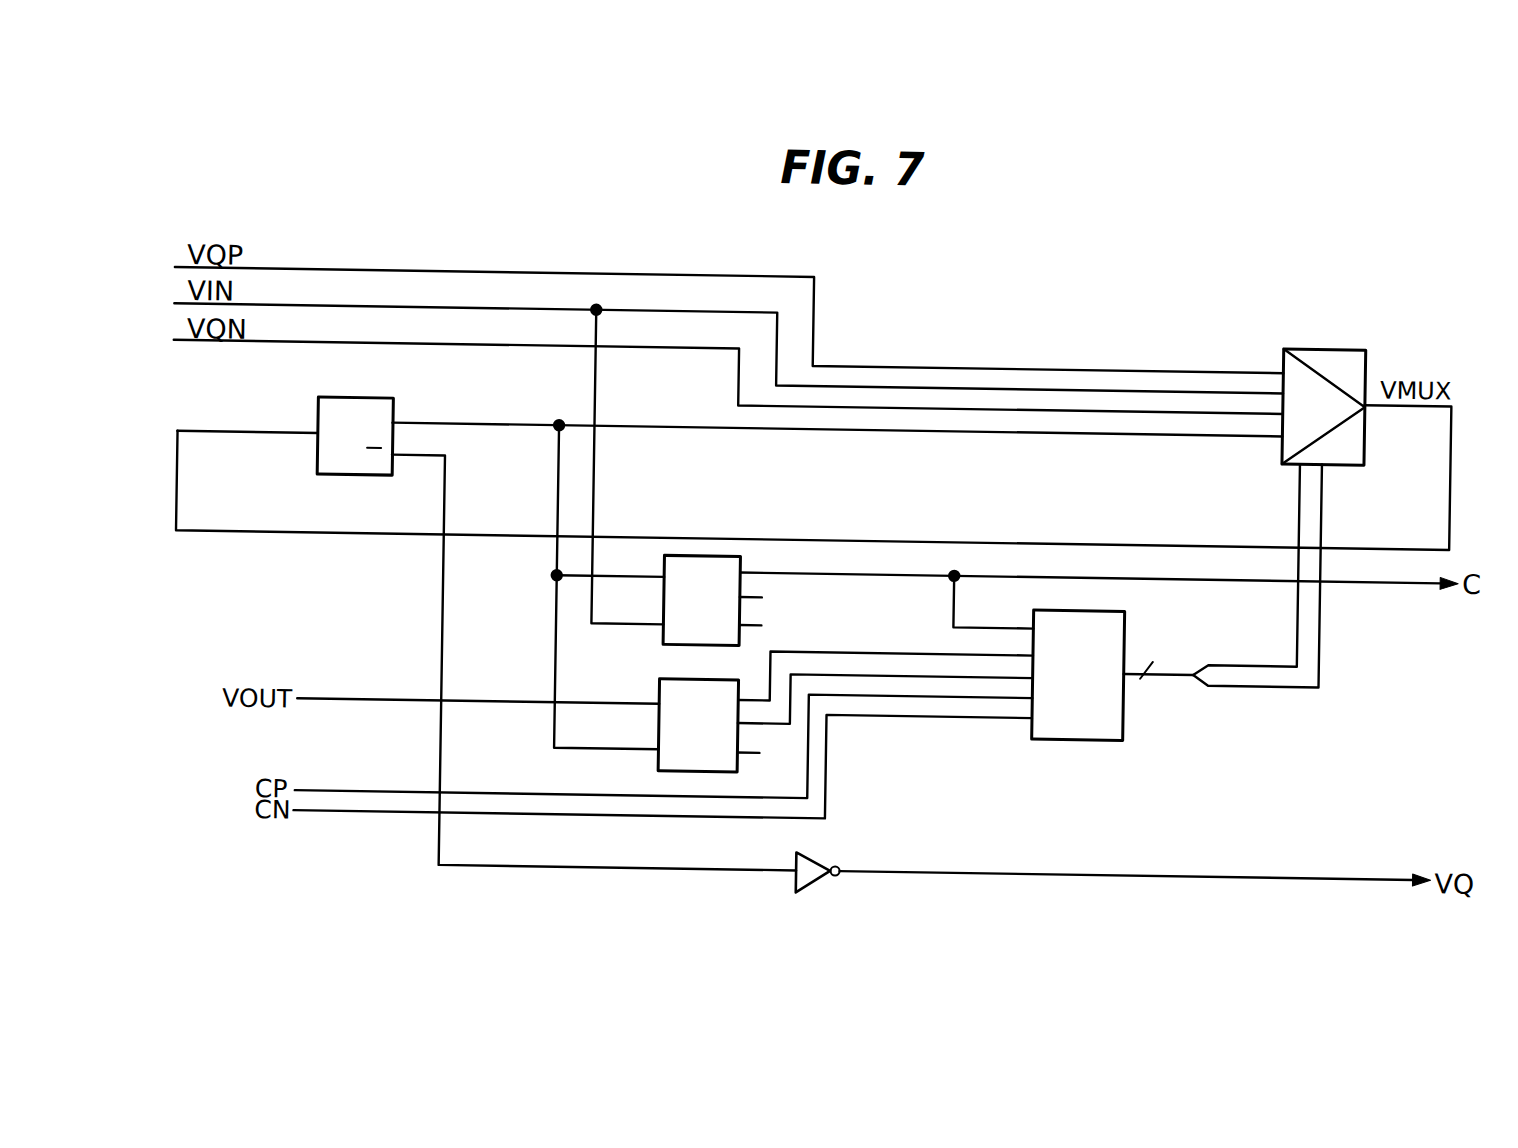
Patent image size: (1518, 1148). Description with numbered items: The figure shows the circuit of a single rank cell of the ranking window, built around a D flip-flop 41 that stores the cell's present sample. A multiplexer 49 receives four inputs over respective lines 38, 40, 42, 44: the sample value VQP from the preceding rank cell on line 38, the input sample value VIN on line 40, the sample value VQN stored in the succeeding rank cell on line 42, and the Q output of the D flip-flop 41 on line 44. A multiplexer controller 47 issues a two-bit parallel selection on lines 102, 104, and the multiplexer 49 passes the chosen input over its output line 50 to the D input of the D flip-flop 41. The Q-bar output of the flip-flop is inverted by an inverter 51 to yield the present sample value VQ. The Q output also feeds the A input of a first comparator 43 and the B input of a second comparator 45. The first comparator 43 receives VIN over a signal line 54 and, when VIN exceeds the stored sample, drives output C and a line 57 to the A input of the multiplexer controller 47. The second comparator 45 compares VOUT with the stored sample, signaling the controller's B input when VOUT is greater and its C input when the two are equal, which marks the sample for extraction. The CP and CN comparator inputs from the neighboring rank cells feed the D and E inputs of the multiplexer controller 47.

The line 38 is at (820, 325).
The line 40 is at (781, 336).
The D flip-flop 41 is at (400, 404).
The line 42 is at (744, 375).
The first comparator 43 is at (672, 633).
The line 44 is at (802, 422).
The second comparator 45 is at (669, 672).
The multiplexer controller 47 is at (1134, 613).
The multiplexer 49 is at (1327, 327).
The output line 50 is at (986, 528).
The inverter 51 is at (831, 847).
The signal line 54 is at (604, 484).
The line 57 is at (995, 613).
The line 102 is at (1330, 503).
The line 104 is at (1305, 500).